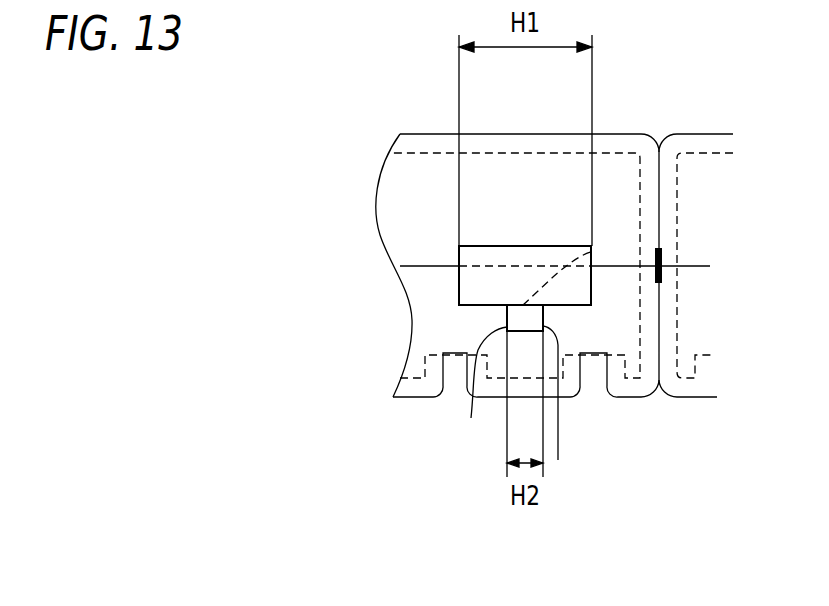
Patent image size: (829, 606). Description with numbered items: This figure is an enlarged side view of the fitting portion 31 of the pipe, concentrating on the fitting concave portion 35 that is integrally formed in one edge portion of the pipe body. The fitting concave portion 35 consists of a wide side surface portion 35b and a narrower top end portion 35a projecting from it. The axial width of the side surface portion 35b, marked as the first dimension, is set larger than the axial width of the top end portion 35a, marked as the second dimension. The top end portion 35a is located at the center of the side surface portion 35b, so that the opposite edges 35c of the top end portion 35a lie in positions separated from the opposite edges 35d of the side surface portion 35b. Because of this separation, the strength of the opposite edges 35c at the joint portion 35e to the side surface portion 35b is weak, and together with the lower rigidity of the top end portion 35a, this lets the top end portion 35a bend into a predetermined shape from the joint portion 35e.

The fitting portion 31 is at (583, 336).
The fitting concave portion 35 is at (519, 346).
The top end portion 35a is at (518, 315).
The side surface portion 35b is at (482, 289).
The opposite edges of the top end portion 35c is at (471, 418).
The opposite edges of the side surface portion 35d is at (459, 278).
The joint portion 35e is at (591, 252).